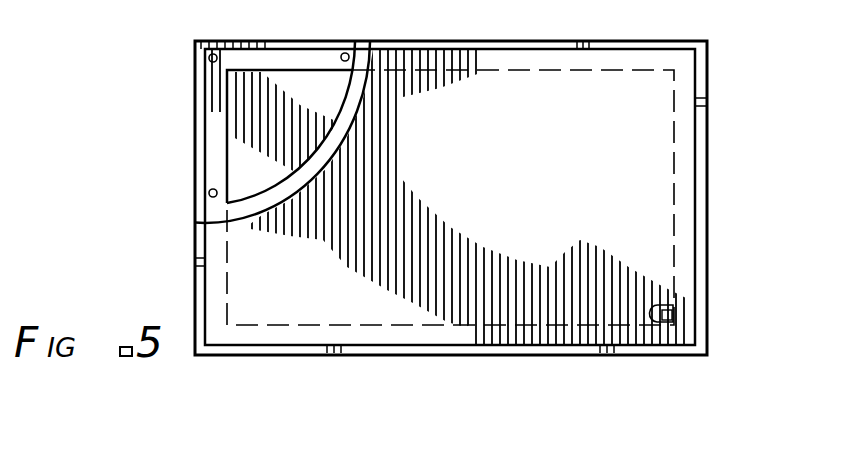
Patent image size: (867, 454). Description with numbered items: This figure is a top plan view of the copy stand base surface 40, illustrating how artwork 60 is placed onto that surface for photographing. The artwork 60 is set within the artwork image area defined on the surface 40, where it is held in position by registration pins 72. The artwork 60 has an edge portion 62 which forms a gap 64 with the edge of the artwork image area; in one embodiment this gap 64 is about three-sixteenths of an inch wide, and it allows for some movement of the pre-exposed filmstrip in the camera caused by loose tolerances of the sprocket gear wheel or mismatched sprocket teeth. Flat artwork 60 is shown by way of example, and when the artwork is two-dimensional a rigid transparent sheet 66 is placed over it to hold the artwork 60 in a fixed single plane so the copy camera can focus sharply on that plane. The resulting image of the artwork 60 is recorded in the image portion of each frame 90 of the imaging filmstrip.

The surface 40 is at (692, 193).
The artwork 60 is at (246, 141).
The edge portion 62 is at (342, 106).
The gap 64 is at (316, 165).
The rigid transparent sheet 66 is at (622, 42).
The registration pins 72 is at (208, 57).
The frame 90 is at (677, 308).